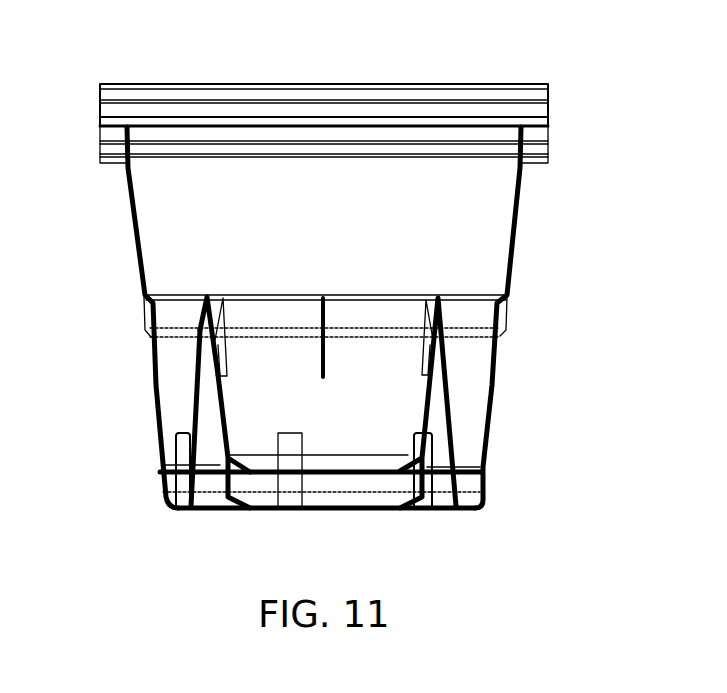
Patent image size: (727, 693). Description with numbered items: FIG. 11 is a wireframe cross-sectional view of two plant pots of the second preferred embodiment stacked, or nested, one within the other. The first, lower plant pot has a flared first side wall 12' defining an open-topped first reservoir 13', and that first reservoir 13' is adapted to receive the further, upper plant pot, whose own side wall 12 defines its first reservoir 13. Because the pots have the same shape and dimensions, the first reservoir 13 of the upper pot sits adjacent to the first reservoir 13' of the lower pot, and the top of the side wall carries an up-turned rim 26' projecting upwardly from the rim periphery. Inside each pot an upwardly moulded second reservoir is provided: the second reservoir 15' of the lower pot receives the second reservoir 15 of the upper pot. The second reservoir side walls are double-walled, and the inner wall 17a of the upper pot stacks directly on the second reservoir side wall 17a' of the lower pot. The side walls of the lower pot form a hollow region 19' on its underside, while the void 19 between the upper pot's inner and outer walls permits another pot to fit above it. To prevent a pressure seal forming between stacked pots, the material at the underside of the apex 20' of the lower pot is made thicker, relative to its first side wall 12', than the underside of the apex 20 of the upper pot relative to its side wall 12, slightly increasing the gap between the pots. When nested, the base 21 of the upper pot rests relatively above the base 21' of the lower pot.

The side wall 12 is at (335, 317).
The first side wall 12' is at (535, 317).
The first reservoir 13 is at (285, 249).
The first reservoir 13' is at (196, 309).
The second reservoir 15 is at (466, 403).
The second reservoir 15' is at (353, 479).
The inner wall 17a is at (286, 337).
The second reservoir side wall 17a' is at (490, 351).
The hollow region 19 is at (167, 391).
The hollow region 19' is at (199, 496).
The apex 20 is at (151, 324).
The apex 20' is at (150, 418).
The base 21 is at (321, 490).
The base 21' is at (311, 497).
The up-turned rim 26' is at (364, 102).